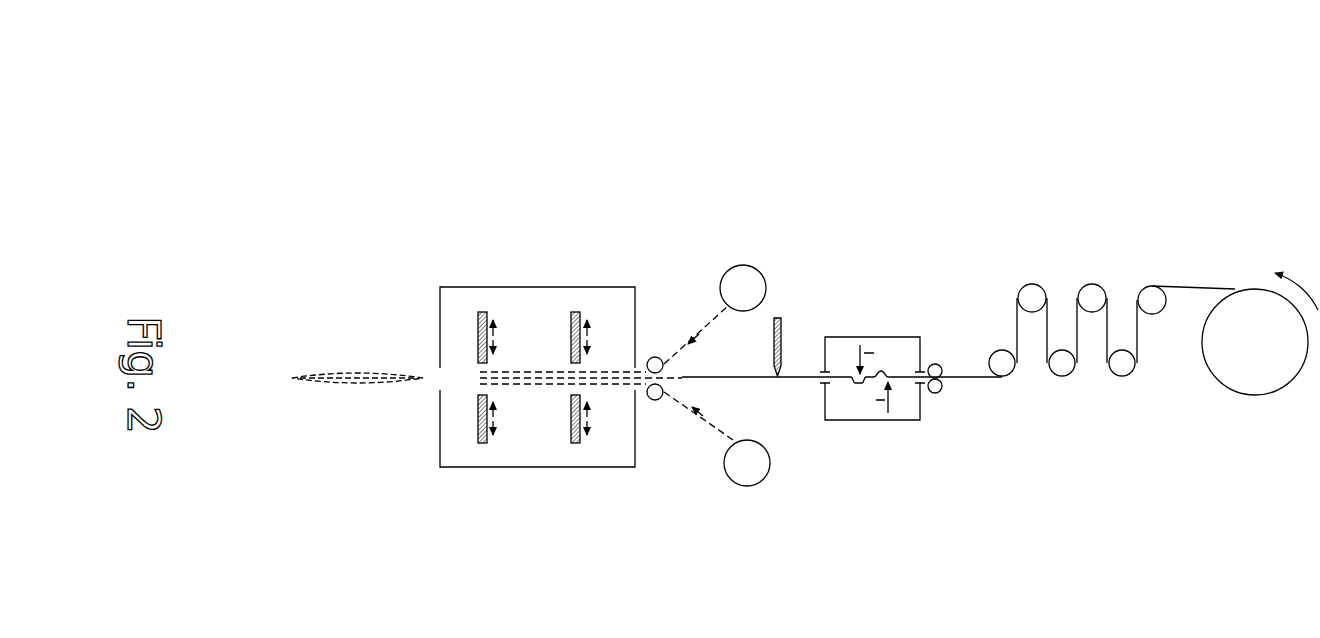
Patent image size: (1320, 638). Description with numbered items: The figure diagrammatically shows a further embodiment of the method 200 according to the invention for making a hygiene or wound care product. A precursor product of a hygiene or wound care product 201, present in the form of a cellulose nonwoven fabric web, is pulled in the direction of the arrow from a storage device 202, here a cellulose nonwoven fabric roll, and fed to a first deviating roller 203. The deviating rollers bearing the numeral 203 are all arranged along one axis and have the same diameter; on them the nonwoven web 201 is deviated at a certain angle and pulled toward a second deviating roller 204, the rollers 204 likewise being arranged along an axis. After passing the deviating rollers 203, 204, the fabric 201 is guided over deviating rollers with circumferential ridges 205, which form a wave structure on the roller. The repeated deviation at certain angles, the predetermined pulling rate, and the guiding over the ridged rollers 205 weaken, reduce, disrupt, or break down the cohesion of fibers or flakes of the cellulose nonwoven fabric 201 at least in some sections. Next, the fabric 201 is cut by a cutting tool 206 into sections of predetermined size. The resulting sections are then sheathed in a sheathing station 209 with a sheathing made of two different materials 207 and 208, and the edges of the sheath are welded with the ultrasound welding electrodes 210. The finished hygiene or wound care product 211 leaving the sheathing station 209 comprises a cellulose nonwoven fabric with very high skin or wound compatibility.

The method 200 is at (962, 106).
The precursor product of a hygiene or wound care product 201 is at (1200, 284).
The storage device 202 is at (1260, 357).
The first deviating roller 203 is at (1157, 288).
The second deviating roller 204 is at (1000, 377).
The deviating rollers with circumferential ridges 205 is at (859, 431).
The cutting tool 206 is at (783, 323).
The sheathing material 207 is at (737, 488).
The sheathing material 208 is at (758, 265).
The sheathing station 209 is at (495, 467).
The ultrasound welding electrodes 210 is at (571, 322).
The finished product 211 is at (343, 381).